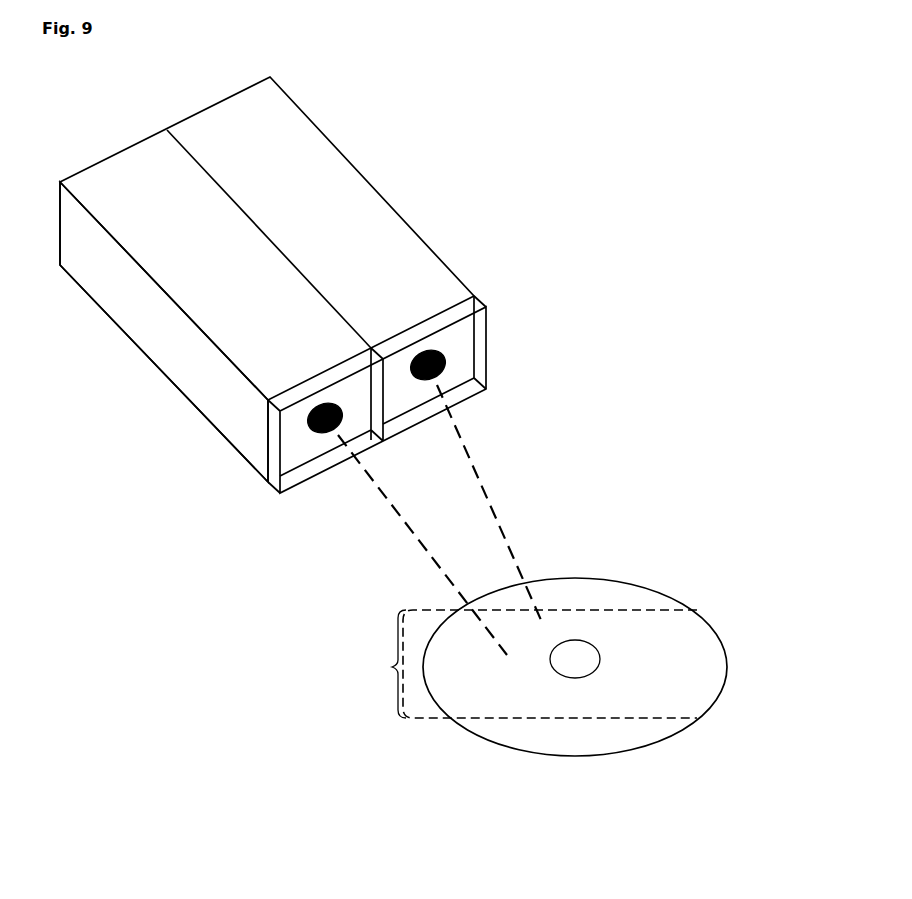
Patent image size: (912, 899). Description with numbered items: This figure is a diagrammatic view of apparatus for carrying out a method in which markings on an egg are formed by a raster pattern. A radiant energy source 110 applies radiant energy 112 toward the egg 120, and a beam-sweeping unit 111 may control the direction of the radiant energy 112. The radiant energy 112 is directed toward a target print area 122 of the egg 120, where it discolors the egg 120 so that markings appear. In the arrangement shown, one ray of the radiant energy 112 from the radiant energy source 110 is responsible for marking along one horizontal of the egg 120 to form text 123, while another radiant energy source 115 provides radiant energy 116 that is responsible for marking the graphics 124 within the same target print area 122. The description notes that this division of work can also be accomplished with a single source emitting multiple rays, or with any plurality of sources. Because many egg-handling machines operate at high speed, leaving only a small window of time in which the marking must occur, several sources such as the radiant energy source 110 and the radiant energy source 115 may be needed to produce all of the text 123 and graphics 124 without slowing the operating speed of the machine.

The radiant energy source 110 is at (442, 255).
The beam-sweeping unit 111 is at (484, 300).
The radiant energy 112 is at (491, 487).
The radiant energy source 115 is at (212, 387).
The radiant energy 116 is at (410, 530).
The egg 120 is at (670, 585).
The target print area 122 is at (392, 667).
The text 123 is at (623, 630).
The graphics 124 is at (646, 658).